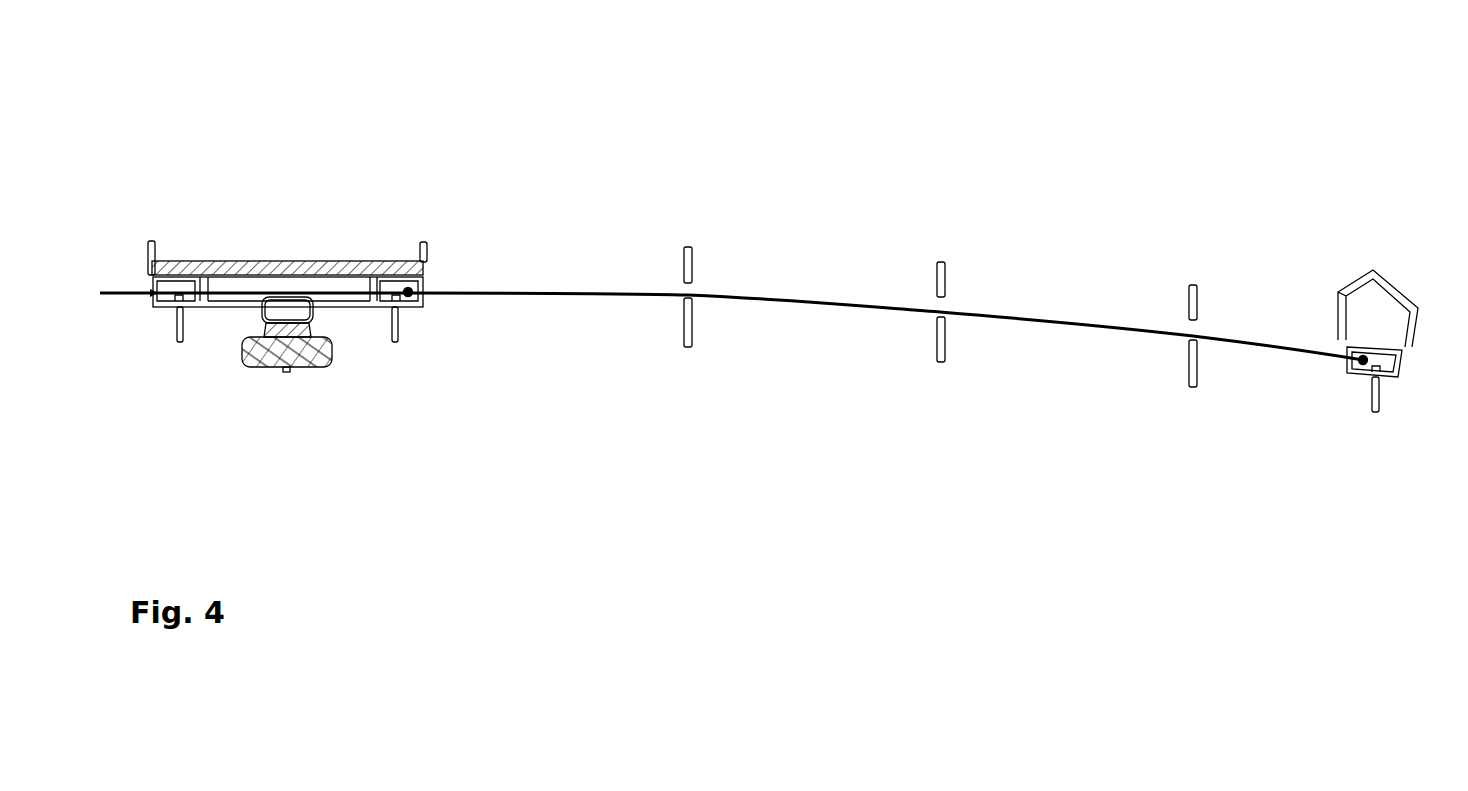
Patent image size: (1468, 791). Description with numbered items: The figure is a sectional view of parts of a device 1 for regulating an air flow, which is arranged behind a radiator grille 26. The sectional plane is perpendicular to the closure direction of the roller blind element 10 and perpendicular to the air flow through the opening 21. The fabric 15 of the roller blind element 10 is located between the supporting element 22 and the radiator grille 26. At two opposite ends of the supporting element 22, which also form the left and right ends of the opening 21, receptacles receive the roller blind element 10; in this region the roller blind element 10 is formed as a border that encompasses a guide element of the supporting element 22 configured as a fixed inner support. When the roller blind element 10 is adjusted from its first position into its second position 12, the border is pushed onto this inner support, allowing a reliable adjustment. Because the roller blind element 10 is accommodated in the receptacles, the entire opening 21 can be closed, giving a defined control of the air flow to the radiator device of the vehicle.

The device for regulating an air flow 1 is at (378, 206).
The second position 12 is at (566, 124).
The roller blind element 10 is at (731, 287).
The fabric 15 is at (875, 306).
The radiator grille 26 is at (946, 283).
The supporting element 22 is at (946, 338).
The opening 21 is at (845, 484).